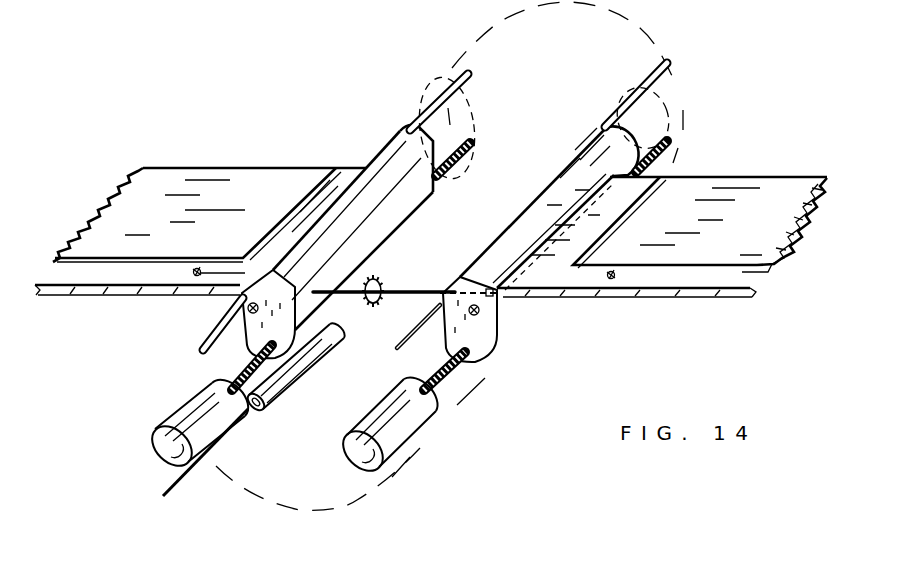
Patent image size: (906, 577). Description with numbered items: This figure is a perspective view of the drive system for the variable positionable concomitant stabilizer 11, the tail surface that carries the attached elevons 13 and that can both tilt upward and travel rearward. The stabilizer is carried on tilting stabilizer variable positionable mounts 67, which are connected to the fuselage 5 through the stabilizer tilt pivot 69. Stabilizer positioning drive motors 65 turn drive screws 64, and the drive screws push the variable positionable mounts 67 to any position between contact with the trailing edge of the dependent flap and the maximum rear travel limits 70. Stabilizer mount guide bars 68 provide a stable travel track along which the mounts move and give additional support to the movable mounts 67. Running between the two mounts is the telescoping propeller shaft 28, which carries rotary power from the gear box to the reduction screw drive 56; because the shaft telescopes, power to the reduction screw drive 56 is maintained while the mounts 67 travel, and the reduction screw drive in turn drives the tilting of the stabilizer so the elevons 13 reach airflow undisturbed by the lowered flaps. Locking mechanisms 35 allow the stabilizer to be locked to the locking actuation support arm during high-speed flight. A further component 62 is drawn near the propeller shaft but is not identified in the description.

The fuselage 5 is at (508, 306).
The concomitant stabilizer 11 is at (80, 295).
The elevons 13 is at (197, 168).
The telescoping propeller shaft 28 is at (310, 372).
The locking mechanisms 35 is at (193, 273).
The reduction screw drive 56 is at (380, 283).
The shaft 62 is at (407, 292).
The drive screws 64 is at (472, 143).
The stabilizer positioning drive motors 65 is at (156, 448).
The tilting stabilizer variable positionable mounts 67 is at (390, 147).
The stabilizer mount guide bars 68 is at (653, 78).
The stabilizer tilt pivot 69 is at (242, 346).
The maximum rear travel limits 70 is at (438, 85).